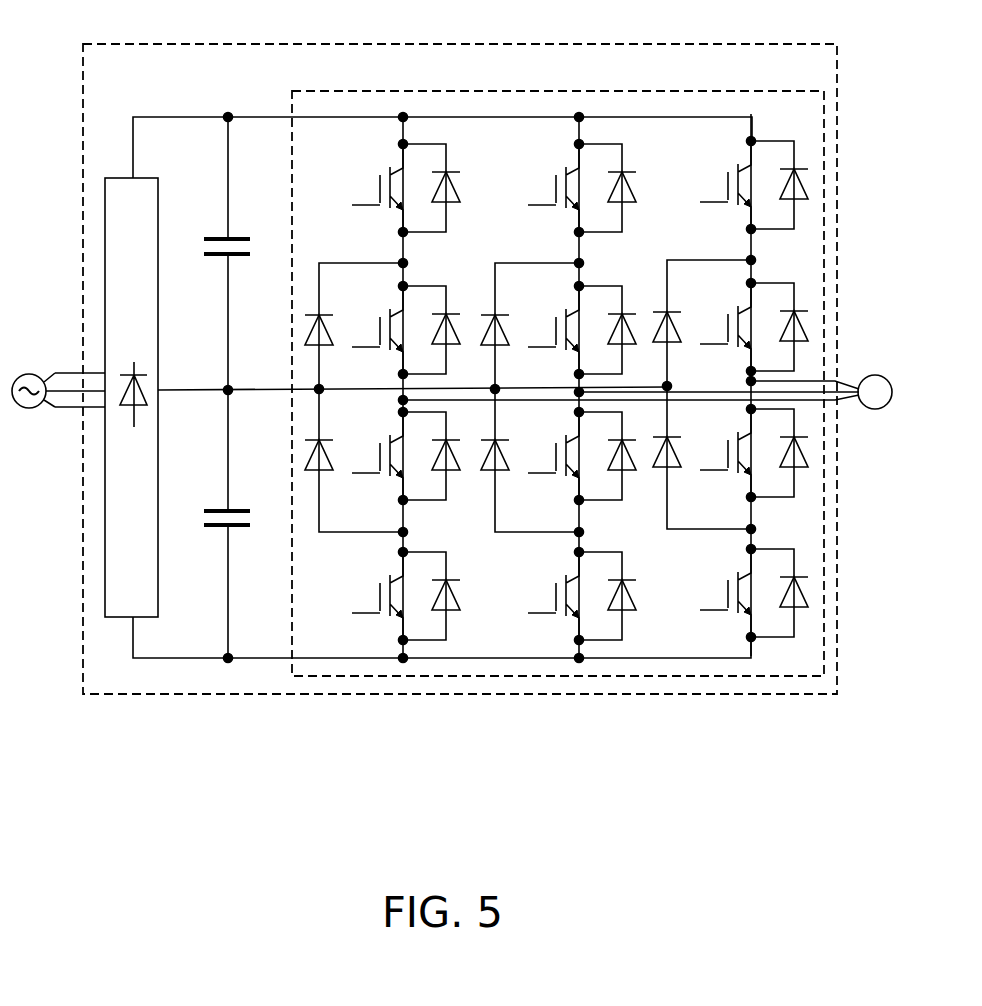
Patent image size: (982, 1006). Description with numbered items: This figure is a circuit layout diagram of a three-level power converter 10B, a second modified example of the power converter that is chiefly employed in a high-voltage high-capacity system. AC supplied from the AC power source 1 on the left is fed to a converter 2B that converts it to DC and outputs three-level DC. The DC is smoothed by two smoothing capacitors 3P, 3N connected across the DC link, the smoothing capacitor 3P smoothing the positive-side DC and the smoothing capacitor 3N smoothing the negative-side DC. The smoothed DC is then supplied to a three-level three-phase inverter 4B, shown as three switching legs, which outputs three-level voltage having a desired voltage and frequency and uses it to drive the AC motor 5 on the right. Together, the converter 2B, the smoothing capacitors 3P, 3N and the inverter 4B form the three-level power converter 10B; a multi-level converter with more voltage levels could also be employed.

The three-level power converter 10B is at (450, 43).
The three-level three-phase inverter 4B is at (553, 91).
The converter 2B is at (140, 178).
The smoothing capacitor 3P is at (229, 239).
The smoothing capacitor 3N is at (229, 510).
The AC power source 1 is at (34, 376).
The AC motor 5 is at (871, 376).